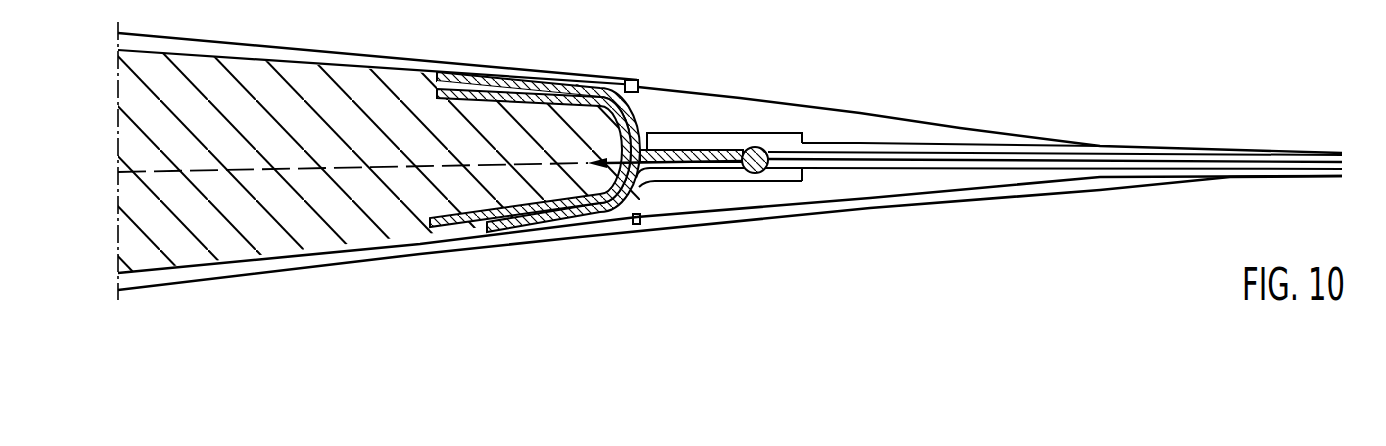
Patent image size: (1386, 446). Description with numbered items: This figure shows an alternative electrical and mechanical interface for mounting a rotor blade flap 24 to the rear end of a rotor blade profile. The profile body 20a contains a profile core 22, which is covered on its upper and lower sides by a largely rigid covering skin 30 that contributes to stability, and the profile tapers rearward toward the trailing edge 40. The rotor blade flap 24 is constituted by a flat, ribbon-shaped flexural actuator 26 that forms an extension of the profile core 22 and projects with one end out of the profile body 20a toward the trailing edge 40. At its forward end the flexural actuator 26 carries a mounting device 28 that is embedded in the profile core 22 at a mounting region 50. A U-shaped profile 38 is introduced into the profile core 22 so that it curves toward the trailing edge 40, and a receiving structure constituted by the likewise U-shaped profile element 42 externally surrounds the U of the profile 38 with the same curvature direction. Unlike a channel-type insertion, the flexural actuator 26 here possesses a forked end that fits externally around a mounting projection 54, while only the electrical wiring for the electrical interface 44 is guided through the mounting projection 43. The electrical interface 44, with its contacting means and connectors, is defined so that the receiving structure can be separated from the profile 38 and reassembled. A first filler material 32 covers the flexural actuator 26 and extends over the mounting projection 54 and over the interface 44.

The profile body 20a is at (386, 40).
The profile core 22 is at (330, 244).
The rotor blade flap 24 is at (925, 88).
The flexural actuator 26 is at (947, 163).
The mounting device 28 is at (538, 53).
The covering skin 30 is at (283, 57).
The first filler material 32 is at (1055, 175).
The profile 38 is at (630, 197).
The trailing edge 40 is at (1332, 130).
The profile element 42 is at (572, 240).
The mounting projection 43 is at (502, 243).
The electrical interface 44 is at (753, 147).
The mounting region 50 is at (638, 57).
The mounting projection 54 is at (717, 177).